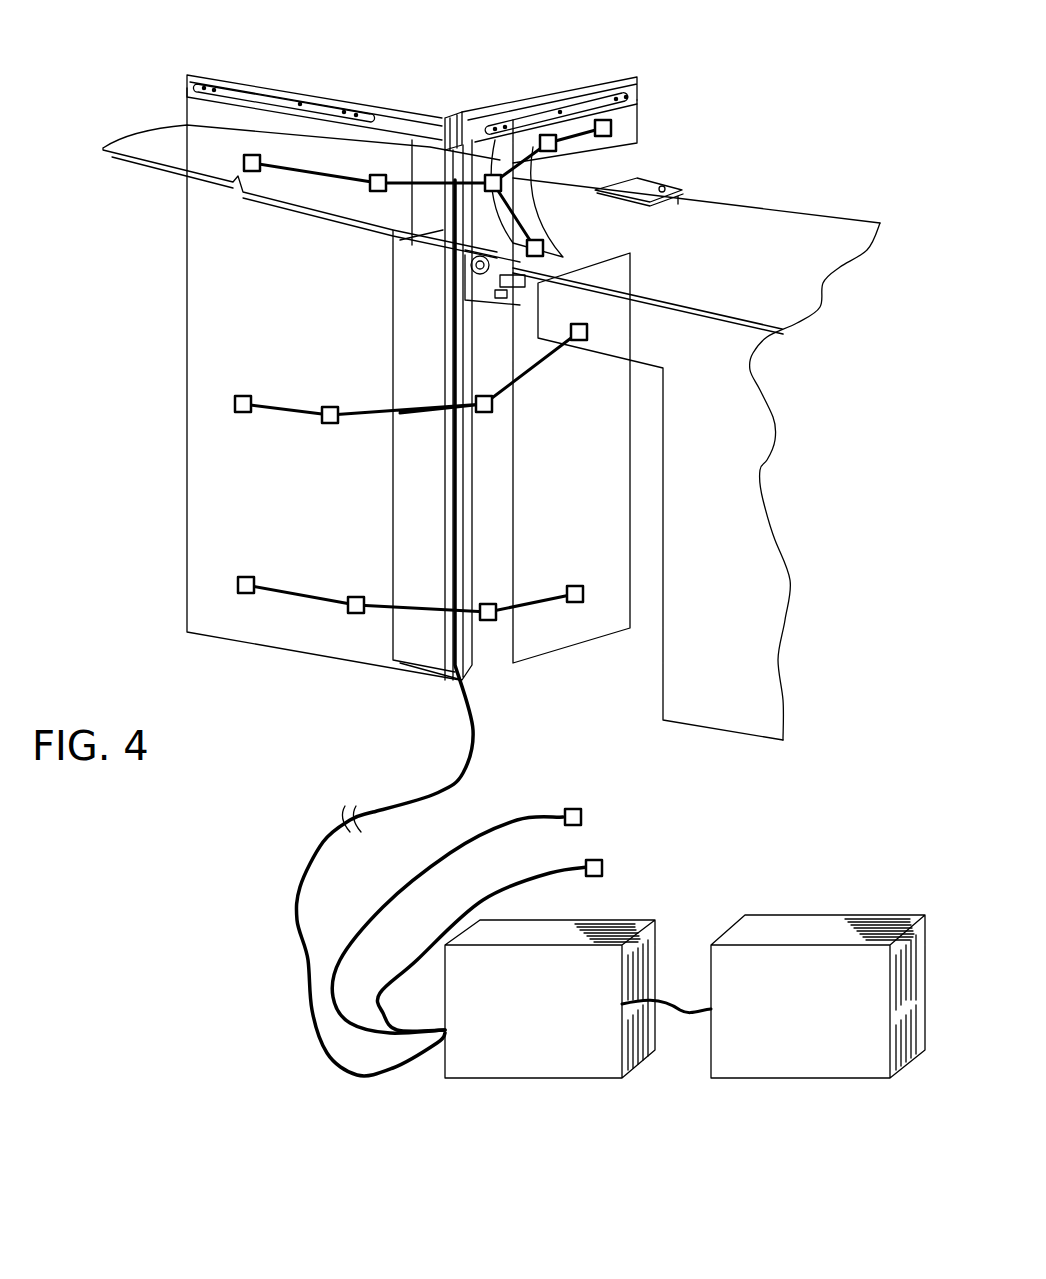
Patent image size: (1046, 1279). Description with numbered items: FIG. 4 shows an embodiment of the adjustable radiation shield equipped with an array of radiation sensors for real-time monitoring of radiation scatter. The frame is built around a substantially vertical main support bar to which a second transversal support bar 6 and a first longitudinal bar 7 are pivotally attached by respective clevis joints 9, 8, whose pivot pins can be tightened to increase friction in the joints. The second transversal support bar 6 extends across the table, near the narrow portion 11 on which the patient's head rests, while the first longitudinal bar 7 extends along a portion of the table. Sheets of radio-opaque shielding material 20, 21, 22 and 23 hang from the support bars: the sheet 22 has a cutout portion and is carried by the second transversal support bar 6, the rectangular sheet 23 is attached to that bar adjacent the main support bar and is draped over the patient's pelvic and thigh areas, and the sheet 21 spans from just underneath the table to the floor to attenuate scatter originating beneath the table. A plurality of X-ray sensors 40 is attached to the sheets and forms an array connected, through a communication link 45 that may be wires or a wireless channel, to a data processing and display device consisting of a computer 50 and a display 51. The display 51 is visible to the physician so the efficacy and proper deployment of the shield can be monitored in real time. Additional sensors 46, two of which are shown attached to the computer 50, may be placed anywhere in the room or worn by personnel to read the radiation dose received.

The second transversal support bar 6 is at (597, 80).
The first longitudinal bar 7 is at (250, 85).
The clevis joint 8 is at (448, 118).
The clevis joint 9 is at (472, 118).
The narrow portion 11 is at (160, 138).
The sheet of radio-opaque shielding material 20 is at (210, 358).
The sheet of radio-opaque shielding material 21 is at (608, 453).
The sheet of radio-opaque shielding material 22 is at (630, 122).
The sheet of radio-opaque shielding material 23 is at (582, 252).
The X-ray sensors 40 is at (255, 171).
The communication link 45 is at (322, 842).
The additional sensors 46 is at (577, 805).
The computer 50 is at (517, 1082).
The display 51 is at (790, 1082).